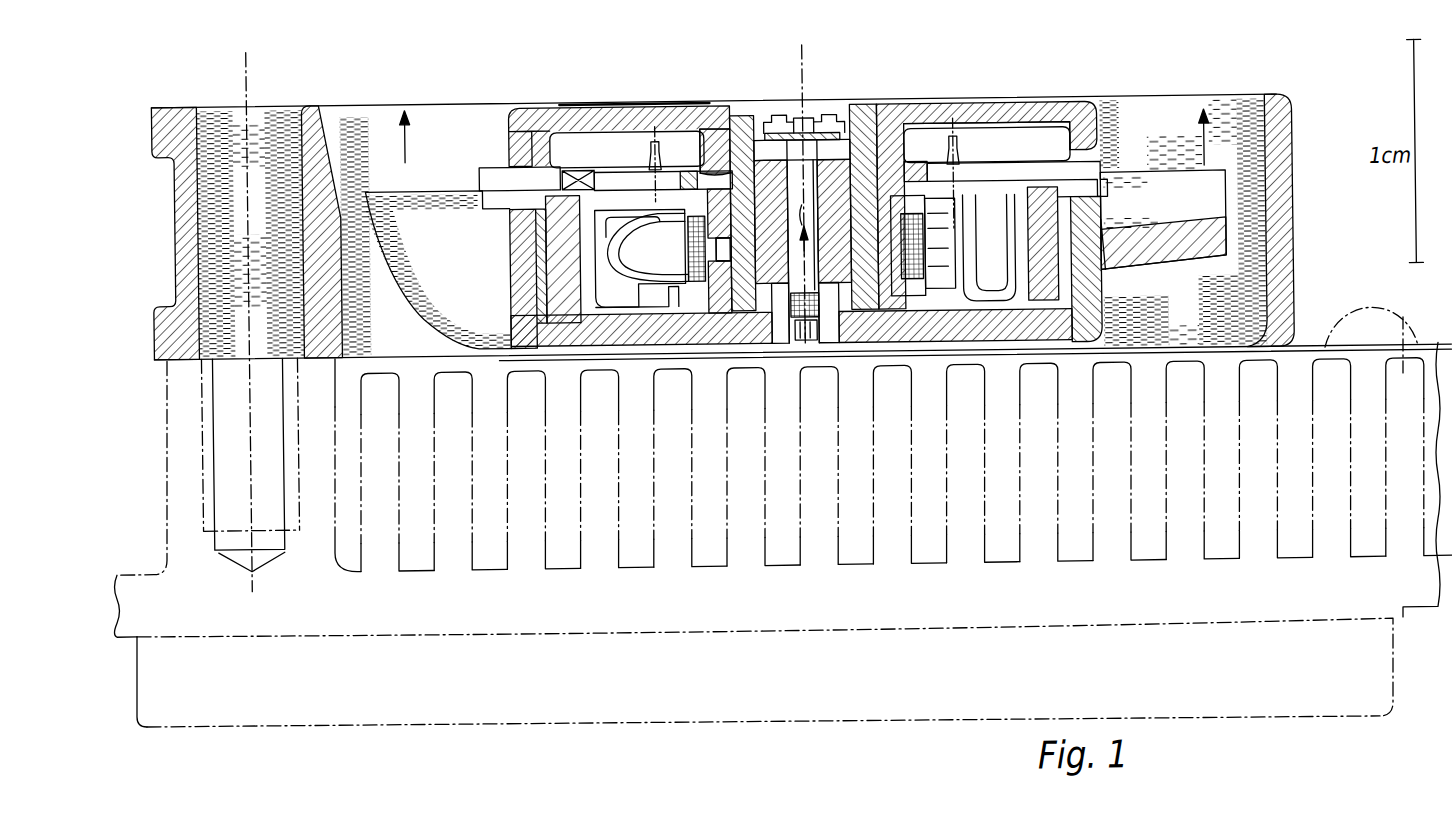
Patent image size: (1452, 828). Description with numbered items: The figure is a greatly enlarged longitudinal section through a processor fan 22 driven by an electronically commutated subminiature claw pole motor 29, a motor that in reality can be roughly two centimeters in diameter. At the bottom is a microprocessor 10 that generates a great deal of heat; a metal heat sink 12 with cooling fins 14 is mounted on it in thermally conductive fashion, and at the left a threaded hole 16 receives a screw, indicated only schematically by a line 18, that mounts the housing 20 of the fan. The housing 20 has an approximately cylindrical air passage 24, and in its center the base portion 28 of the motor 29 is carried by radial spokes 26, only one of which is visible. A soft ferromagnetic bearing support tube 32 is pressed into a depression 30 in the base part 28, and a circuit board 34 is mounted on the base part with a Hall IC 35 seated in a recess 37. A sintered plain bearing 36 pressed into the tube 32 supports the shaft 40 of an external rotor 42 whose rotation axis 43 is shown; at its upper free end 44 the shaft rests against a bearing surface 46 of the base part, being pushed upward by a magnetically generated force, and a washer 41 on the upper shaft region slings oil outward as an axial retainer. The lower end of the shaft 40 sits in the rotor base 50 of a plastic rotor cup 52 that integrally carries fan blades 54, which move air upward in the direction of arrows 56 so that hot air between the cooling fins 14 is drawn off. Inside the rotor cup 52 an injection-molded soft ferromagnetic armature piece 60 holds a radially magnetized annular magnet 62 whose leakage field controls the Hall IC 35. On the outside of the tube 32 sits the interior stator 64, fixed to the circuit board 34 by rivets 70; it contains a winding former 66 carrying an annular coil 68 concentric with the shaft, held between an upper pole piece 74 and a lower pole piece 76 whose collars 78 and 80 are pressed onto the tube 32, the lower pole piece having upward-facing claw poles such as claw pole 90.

The microprocessor 10 is at (775, 686).
The heat sink 12 is at (943, 606).
The cooling fins 14 is at (1371, 330).
The threaded hole 16 is at (242, 346).
The line 18 is at (262, 63).
The housing 20 is at (178, 104).
The processor fan 22 is at (1178, 114).
The air passage 24 is at (322, 104).
The radial spokes 26 is at (1144, 139).
The base portion 28 is at (1072, 106).
The electronically commutated claw pole motor 29 is at (928, 90).
The depression 30 is at (740, 118).
The bearing support tube 32 is at (901, 145).
The circuit board 34 is at (510, 184).
The Hall IC 35 is at (547, 158).
The plain bearing 36 is at (867, 125).
The recess 37 is at (586, 102).
The shaft 40 is at (832, 157).
The washer 41 is at (764, 100).
The external rotor 42 is at (1108, 287).
The rotation axis 43 is at (822, 48).
The free end 44 is at (797, 96).
The bearing surface 46 is at (795, 110).
The rotor base 50 is at (862, 340).
The rotor cup 52 is at (505, 275).
The fan blades 54 is at (439, 227).
The arrows 56 is at (410, 150).
The armature piece 60 is at (1103, 226).
The annular magnet 62 is at (550, 238).
The interior stator 64 is at (590, 286).
The winding former 66 is at (964, 206).
The annular coil 68 is at (963, 263).
The rivets 70 is at (652, 160).
The upper pole piece 74 is at (735, 118).
The lower pole piece 76 is at (662, 290).
The collar 78 is at (695, 230).
The collar 80 is at (727, 320).
The claw pole 90 is at (662, 216).